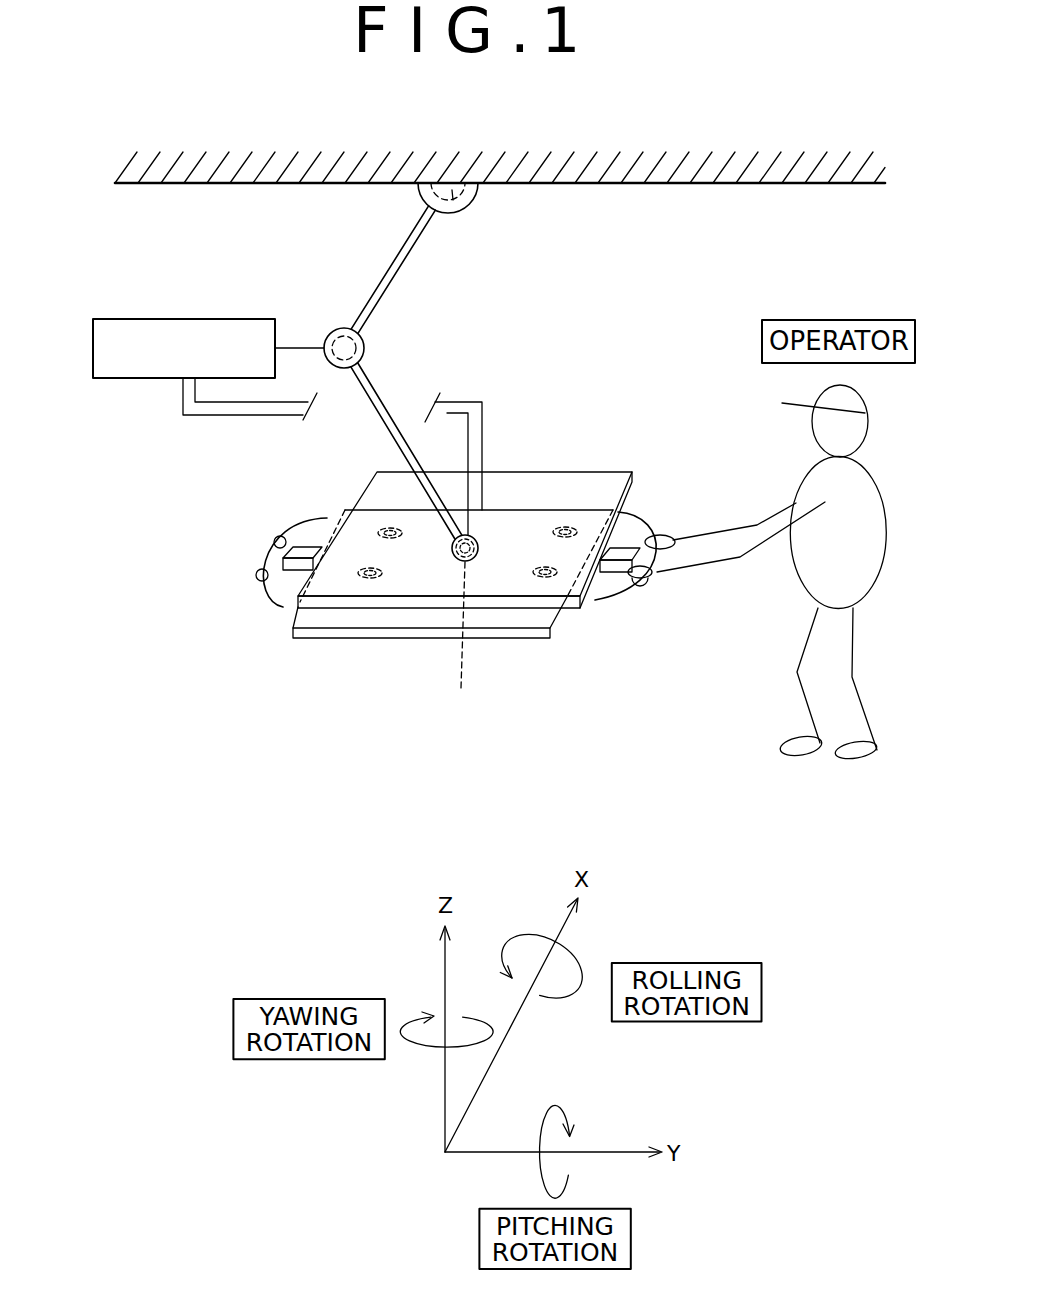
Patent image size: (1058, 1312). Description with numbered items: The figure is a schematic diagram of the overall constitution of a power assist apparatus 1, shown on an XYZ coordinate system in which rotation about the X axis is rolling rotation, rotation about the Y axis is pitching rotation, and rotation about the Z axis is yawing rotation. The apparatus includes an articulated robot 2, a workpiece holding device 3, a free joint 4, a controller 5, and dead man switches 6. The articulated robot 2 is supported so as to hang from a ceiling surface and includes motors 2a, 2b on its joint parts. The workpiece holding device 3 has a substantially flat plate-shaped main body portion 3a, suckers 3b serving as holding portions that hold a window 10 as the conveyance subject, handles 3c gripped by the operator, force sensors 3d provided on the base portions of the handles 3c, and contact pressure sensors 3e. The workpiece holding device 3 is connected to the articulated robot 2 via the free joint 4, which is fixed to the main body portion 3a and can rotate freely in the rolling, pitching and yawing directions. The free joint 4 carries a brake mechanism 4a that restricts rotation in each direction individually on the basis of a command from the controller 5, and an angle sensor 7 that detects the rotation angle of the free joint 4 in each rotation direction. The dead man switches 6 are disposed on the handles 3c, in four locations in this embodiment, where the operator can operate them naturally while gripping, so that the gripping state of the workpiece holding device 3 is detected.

The power assist apparatus 1 is at (628, 284).
The articulated robot 2 is at (416, 283).
The motor 2a is at (453, 200).
The motor 2b is at (368, 346).
The workpiece holding device 3 is at (432, 603).
The main body portion 3a is at (492, 510).
The sucker 3b is at (396, 528).
The handle 3c is at (276, 591).
The force sensor 3d is at (297, 563).
The contact pressure sensor 3e is at (378, 527).
The free joint 4 is at (478, 548).
The brake mechanism 4a is at (460, 641).
The controller 5 is at (190, 319).
The dead man switch 6 is at (276, 537).
The angle sensor 7 is at (480, 556).
The window 10 is at (498, 638).